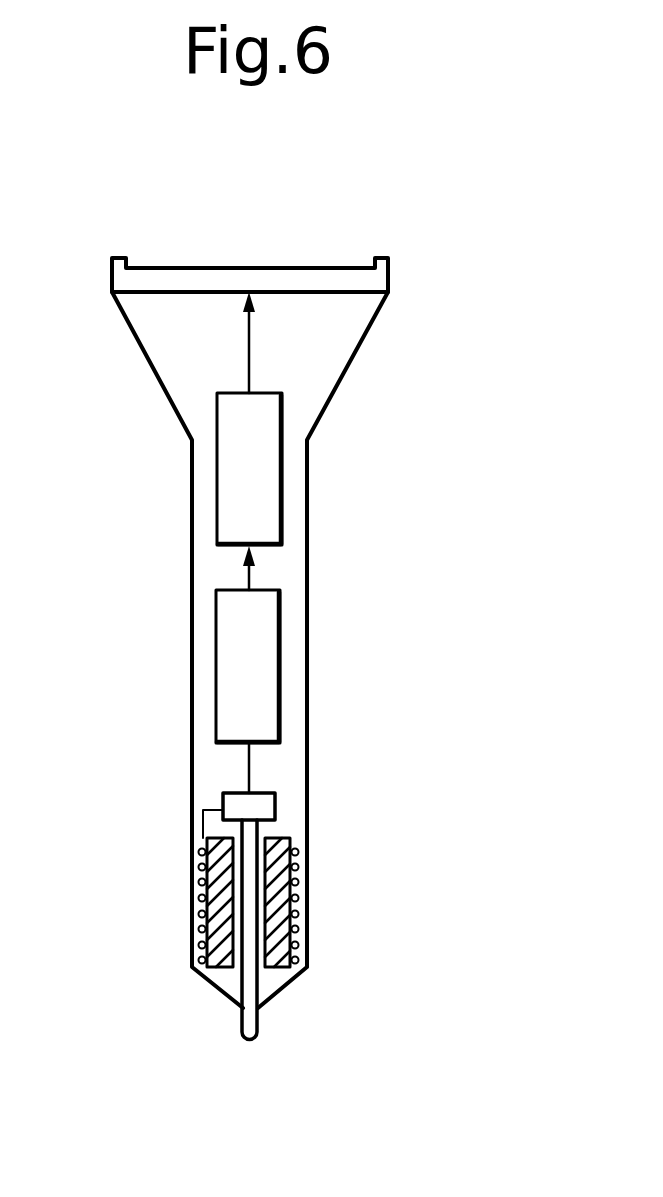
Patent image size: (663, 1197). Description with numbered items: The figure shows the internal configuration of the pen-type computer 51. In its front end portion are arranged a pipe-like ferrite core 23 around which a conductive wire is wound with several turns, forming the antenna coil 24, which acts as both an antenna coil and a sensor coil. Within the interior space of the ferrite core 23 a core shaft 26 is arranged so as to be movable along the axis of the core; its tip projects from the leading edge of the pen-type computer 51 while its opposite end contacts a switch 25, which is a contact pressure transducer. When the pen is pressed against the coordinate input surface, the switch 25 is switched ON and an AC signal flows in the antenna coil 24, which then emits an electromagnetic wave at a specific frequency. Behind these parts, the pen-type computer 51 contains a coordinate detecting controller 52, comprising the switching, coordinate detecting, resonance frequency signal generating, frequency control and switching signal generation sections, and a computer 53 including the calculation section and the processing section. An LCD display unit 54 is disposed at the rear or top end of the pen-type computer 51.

The ferrite core 23 is at (278, 952).
The antenna coil 24 is at (293, 893).
The switch 25 is at (267, 807).
The core shaft 26 is at (243, 983).
The pen-type computer 51 is at (192, 627).
The coordinate detecting controller 52 is at (263, 672).
The computer 53 is at (268, 477).
The LCD display unit 54 is at (360, 284).